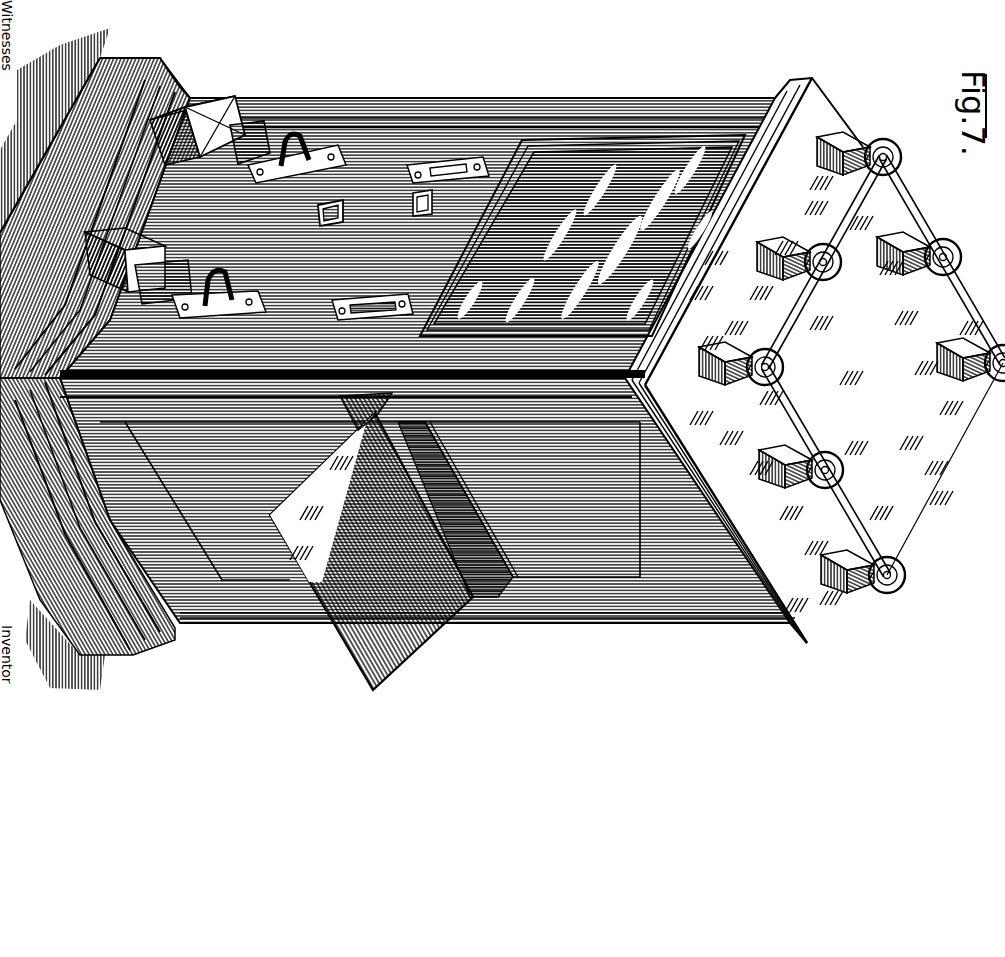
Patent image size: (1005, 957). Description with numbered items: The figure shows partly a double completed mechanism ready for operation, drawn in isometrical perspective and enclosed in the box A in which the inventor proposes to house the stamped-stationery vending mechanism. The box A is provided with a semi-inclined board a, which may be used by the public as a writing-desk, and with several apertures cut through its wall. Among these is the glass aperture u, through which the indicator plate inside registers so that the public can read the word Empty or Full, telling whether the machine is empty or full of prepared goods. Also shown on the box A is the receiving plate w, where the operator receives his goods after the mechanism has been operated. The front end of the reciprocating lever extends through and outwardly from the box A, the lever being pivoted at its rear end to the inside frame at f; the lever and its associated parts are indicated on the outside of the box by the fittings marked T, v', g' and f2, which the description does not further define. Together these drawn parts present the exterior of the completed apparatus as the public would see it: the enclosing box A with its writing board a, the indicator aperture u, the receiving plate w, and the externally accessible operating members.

The box A is at (533, 93).
The semi-inclined board a is at (371, 541).
The receiving plate w is at (194, 100).
The envelope delivery opening f2 is at (240, 127).
The plate g' is at (250, 110).
The operating lever T is at (302, 160).
The coin slot v' is at (346, 152).
The glass aperture u is at (422, 189).
The pivot of reciprocating lever f is at (452, 163).